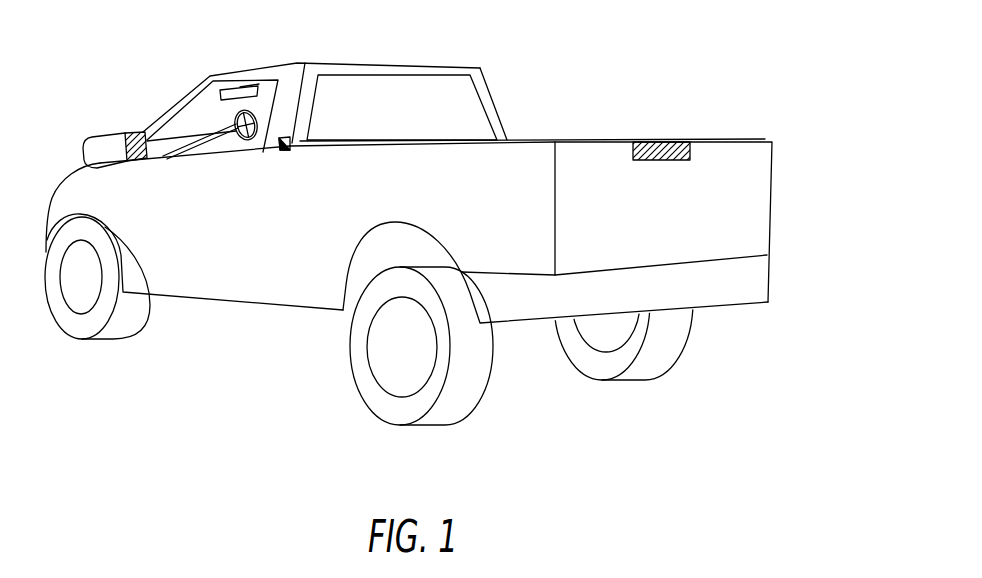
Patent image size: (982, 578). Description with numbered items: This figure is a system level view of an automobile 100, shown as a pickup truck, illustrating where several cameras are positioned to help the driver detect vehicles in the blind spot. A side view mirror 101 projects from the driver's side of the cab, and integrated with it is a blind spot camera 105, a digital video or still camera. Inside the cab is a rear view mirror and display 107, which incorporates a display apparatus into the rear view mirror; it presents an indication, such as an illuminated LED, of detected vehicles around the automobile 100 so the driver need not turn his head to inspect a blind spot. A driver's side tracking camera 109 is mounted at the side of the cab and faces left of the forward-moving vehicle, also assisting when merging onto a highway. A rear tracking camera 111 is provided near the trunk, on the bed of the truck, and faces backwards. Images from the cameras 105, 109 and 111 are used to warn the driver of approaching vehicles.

The automobile 100 is at (566, 76).
The side view mirror 101 is at (88, 137).
The blind spot camera 105 is at (137, 133).
The rear view mirror and display 107 is at (231, 107).
The driver's side tracking camera 109 is at (288, 153).
The rear tracking camera 111 is at (673, 142).